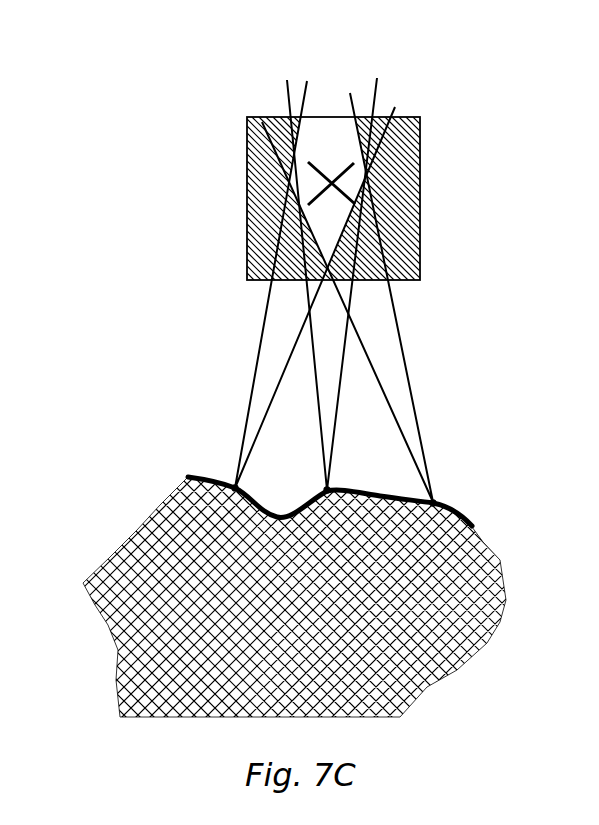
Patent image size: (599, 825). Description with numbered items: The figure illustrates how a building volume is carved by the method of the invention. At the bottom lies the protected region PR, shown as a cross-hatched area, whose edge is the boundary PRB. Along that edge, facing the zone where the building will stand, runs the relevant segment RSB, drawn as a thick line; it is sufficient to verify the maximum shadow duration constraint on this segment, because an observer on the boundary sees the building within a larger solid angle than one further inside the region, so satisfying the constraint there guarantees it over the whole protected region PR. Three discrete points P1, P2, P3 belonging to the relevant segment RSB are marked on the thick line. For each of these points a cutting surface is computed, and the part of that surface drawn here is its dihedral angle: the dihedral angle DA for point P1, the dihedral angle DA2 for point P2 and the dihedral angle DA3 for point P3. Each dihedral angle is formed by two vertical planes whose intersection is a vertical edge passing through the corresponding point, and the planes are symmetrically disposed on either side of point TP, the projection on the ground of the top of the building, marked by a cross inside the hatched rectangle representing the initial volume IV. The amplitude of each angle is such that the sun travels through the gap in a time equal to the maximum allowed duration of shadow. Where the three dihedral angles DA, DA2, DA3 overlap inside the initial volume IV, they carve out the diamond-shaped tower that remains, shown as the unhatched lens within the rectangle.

The projection on the ground of the top of the building TP is at (331, 176).
The initial volume IV is at (248, 190).
The dihedral angle DA is at (328, 387).
The dihedral angle DA2 is at (272, 352).
The dihedral angle DA3 is at (390, 380).
The relevant segment RSB is at (192, 475).
The point P1 is at (310, 482).
The point P2 is at (219, 468).
The point P3 is at (452, 492).
The boundary of the protected region PRB is at (193, 510).
The protected region PR is at (150, 573).